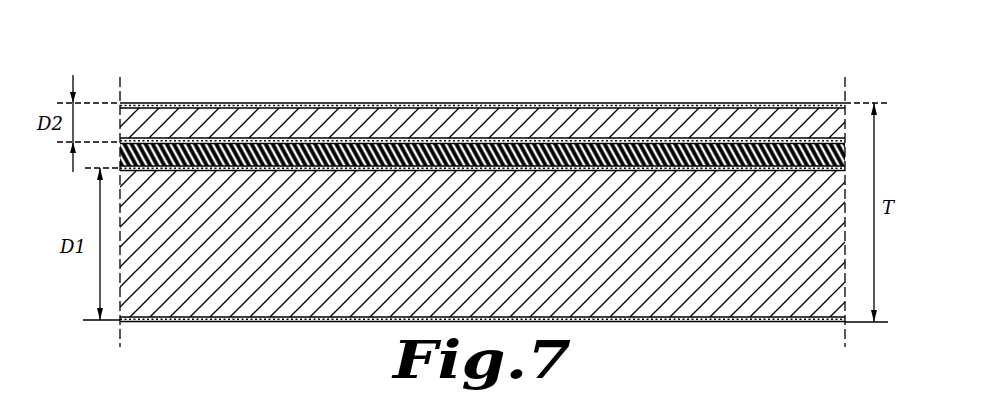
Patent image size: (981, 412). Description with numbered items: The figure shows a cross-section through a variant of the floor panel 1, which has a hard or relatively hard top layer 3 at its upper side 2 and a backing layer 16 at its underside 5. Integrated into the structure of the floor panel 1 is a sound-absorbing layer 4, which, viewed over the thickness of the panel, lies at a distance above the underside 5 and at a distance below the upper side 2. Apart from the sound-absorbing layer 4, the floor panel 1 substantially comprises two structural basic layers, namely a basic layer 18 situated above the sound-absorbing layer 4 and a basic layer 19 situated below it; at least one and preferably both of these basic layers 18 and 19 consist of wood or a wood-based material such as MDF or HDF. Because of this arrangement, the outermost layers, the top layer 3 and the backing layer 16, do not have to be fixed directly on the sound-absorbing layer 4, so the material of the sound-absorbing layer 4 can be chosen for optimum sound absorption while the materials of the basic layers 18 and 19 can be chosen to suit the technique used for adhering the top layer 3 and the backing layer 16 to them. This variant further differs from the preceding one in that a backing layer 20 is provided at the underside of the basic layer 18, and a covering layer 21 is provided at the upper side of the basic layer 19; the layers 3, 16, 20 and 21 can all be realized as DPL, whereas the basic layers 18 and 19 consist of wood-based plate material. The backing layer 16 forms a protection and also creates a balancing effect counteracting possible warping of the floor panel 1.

The floor panel 1 is at (406, 82).
The upper side 2 is at (601, 103).
The top layer 3 is at (226, 103).
The sound-absorbing layer 4 is at (803, 143).
The underside 5 is at (676, 326).
The backing layer 16 is at (210, 323).
The basic layer 18 is at (162, 118).
The basic layer 19 is at (786, 298).
The backing layer 20 is at (337, 145).
The covering layer 21 is at (487, 143).